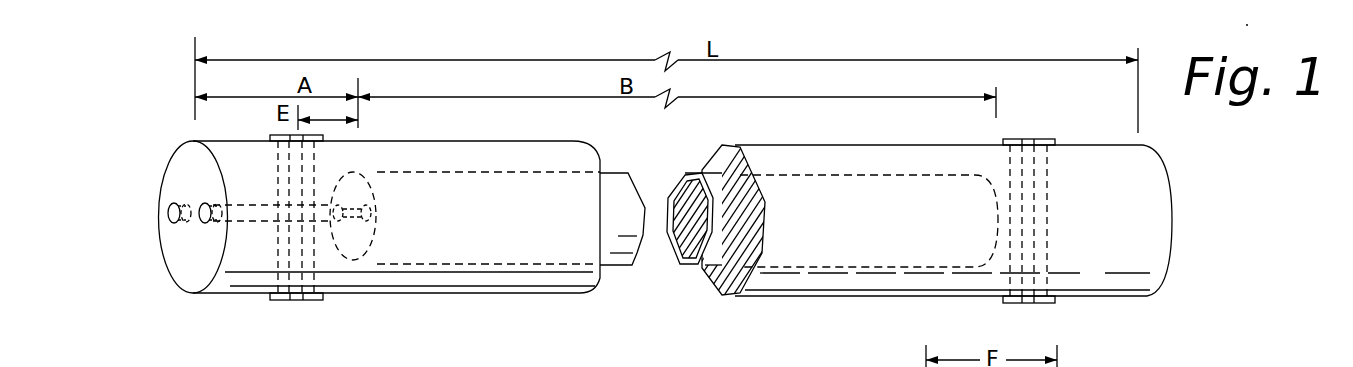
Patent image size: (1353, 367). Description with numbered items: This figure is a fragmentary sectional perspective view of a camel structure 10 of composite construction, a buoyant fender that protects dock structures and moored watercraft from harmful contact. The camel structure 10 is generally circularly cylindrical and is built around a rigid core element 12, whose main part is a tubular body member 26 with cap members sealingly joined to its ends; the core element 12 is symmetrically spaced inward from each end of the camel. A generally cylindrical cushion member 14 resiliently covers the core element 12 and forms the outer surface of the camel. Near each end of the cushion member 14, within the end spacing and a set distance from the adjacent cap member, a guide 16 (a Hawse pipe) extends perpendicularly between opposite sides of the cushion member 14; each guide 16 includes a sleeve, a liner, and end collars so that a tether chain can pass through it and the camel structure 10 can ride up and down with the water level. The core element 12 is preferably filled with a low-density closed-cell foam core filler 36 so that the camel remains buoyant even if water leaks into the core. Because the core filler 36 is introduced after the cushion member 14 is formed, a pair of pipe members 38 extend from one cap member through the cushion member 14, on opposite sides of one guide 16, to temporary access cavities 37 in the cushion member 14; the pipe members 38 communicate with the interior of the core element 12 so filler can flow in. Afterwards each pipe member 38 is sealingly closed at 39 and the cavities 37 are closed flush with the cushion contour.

The camel structure 10 is at (1210, 170).
The core element 12 is at (702, 267).
The cushion member 14 is at (788, 154).
The guide 16 is at (323, 297).
The tubular body member 26 is at (612, 172).
The core filler 36 is at (683, 198).
The temporary access cavity 37 is at (183, 196).
The pipe member 38 is at (243, 209).
The sealed closure 39 is at (211, 226).